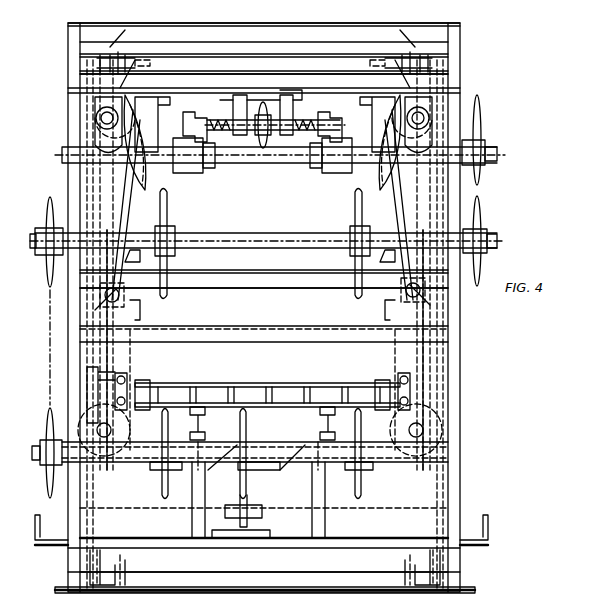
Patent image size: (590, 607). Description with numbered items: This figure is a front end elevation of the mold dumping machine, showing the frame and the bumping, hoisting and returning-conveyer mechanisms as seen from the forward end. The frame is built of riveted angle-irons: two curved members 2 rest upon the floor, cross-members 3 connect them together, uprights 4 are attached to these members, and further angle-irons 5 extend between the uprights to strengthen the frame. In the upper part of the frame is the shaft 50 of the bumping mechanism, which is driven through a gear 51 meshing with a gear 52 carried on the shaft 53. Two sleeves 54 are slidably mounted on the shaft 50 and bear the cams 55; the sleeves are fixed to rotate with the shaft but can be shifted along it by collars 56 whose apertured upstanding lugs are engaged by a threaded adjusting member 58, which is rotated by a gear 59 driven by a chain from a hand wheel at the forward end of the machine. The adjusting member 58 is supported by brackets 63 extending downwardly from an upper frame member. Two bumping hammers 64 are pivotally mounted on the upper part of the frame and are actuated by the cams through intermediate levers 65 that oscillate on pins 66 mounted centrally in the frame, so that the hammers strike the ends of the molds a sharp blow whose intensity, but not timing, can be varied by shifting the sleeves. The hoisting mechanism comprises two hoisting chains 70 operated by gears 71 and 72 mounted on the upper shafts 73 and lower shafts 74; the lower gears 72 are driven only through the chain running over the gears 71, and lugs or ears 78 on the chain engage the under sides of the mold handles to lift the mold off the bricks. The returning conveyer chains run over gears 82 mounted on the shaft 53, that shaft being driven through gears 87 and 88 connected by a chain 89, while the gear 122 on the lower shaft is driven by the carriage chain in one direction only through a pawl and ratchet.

The curved members 2 is at (62, 578).
The cross-members 3 is at (264, 580).
The uprights 4 is at (76, 383).
The angle-irons 5 is at (246, 27).
The shaft 50 is at (280, 166).
The gear 51 is at (479, 140).
The gear 52 is at (480, 258).
The shaft 53 is at (490, 237).
The sleeves 54 is at (209, 170).
The cams 55 is at (160, 107).
The collars 56 is at (193, 170).
The threaded adjusting member 58 is at (283, 133).
The gear 59 is at (262, 150).
The brackets 63 is at (290, 105).
The bumping hammers 64 is at (128, 385).
The intermediate levers 65 is at (118, 223).
The pins 66 is at (262, 299).
The hoisting chains 70 is at (133, 362).
The gears 71 is at (95, 100).
The gears 72 is at (122, 440).
The shafts 73 is at (98, 118).
The shafts 74 is at (104, 437).
The lugs or ears 78 is at (388, 268).
The gears 82 is at (168, 216).
The gear 87 is at (42, 245).
The gear 88 is at (46, 486).
The chain 89 is at (48, 335).
The gear 122 is at (248, 480).